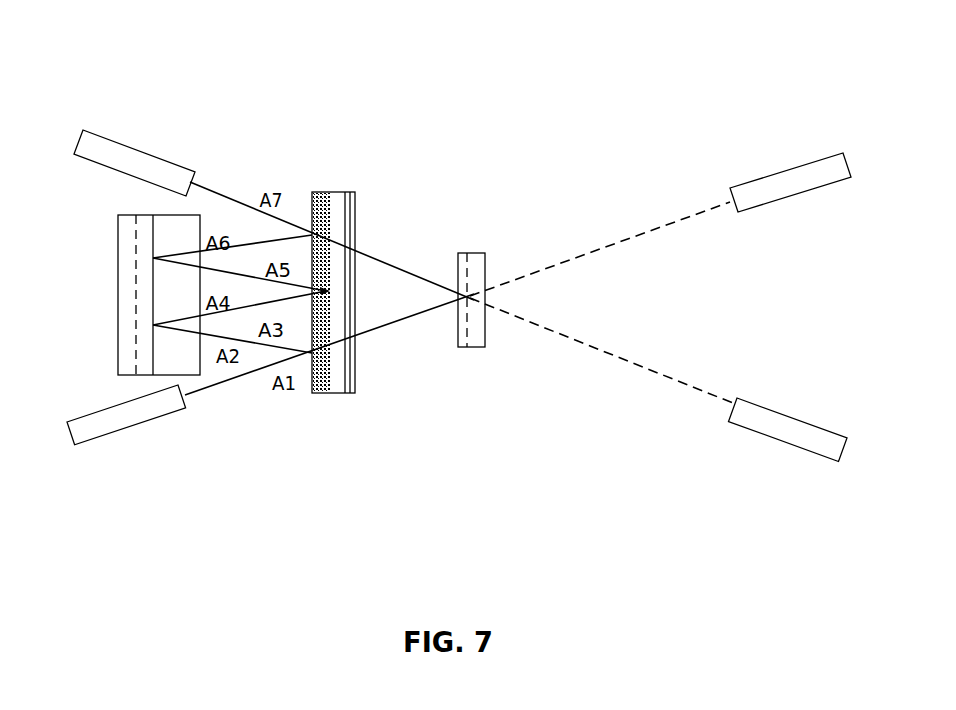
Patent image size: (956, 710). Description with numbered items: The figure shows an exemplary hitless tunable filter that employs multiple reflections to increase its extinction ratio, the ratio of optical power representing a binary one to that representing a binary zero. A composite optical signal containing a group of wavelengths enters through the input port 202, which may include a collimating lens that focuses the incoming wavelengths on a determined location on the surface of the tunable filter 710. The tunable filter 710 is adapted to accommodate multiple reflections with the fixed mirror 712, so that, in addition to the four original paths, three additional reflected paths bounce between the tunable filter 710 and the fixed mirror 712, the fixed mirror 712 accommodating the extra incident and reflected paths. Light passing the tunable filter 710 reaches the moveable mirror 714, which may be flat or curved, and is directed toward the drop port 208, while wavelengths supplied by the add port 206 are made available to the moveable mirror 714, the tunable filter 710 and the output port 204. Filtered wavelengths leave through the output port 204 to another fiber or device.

The input port 202 is at (87, 443).
The output port 204 is at (113, 138).
The add port 206 is at (805, 452).
The drop port 208 is at (805, 165).
The tunable filter 710 is at (315, 190).
The fixed mirror 712 is at (118, 308).
The moveable mirror 714 is at (473, 253).